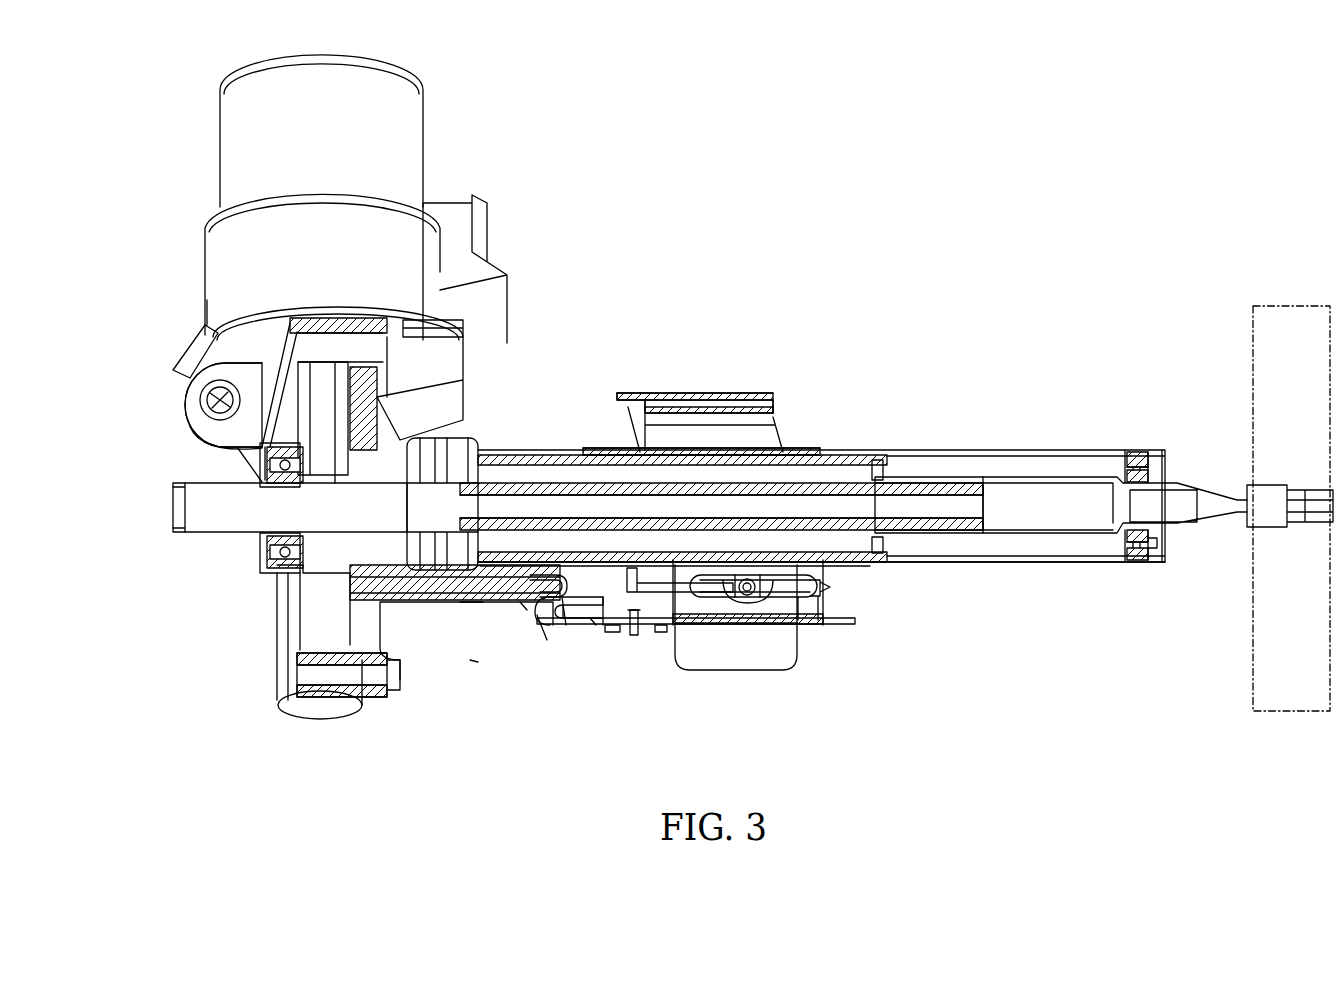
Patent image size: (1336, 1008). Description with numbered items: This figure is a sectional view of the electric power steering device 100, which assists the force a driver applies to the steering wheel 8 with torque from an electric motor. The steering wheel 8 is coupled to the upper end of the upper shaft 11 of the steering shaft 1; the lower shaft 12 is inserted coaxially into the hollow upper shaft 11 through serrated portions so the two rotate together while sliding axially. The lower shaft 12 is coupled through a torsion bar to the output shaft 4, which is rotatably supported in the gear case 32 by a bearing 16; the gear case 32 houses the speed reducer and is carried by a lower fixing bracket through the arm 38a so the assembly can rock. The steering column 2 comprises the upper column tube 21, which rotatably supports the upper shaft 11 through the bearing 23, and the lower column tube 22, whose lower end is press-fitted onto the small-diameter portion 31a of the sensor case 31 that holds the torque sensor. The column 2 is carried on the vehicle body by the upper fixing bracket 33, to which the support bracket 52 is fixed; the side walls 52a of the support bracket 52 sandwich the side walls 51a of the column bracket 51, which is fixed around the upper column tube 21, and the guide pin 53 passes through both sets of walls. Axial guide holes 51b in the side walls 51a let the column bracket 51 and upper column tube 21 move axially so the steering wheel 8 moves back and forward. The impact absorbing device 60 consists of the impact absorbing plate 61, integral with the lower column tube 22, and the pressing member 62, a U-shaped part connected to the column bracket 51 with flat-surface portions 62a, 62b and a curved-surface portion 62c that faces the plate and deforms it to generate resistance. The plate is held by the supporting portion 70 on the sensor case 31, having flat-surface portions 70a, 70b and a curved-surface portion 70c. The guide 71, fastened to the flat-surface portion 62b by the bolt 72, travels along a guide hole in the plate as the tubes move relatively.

The electric power steering device 100 is at (1100, 355).
The steering shaft 1 is at (1104, 439).
The upper shaft 11 is at (1030, 480).
The lower shaft 12 is at (929, 464).
The steering column 2 is at (960, 633).
The upper column tube 21 is at (950, 563).
The lower column tube 22 is at (860, 560).
The bearing 23 is at (1135, 450).
The sensor case 31 is at (463, 440).
The small-diameter portion 31a is at (500, 463).
The gear case 32 is at (290, 625).
The upper fixing bracket 33 is at (740, 393).
The arm 38a is at (195, 415).
The output shaft 4 is at (215, 525).
The bearing 16 is at (277, 578).
The steering wheel 8 is at (1278, 712).
The column bracket 51 is at (828, 587).
The side walls 51a is at (800, 440).
The guide holes 51b is at (798, 620).
The support bracket 52 is at (688, 393).
The side walls 52a is at (780, 410).
The guide pin 53 is at (748, 598).
The impact absorbing device 60 is at (556, 577).
The impact absorbing plate 61 is at (540, 625).
The pressing member 62 is at (593, 594).
The flat-surface portion 62a is at (566, 628).
The flat-surface portion 62b is at (596, 630).
The curved-surface portion 62c is at (547, 642).
The supporting portion 70 is at (473, 605).
The flat-surface portion 70a is at (483, 605).
The flat-surface portion 70b is at (500, 650).
The curved-surface portion 70c is at (527, 605).
The guide 71 is at (615, 626).
The bolt 72 is at (635, 636).